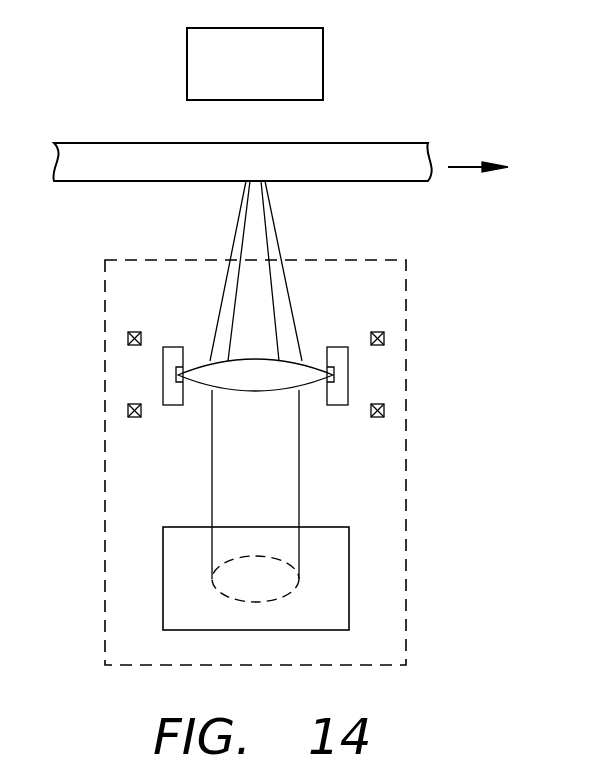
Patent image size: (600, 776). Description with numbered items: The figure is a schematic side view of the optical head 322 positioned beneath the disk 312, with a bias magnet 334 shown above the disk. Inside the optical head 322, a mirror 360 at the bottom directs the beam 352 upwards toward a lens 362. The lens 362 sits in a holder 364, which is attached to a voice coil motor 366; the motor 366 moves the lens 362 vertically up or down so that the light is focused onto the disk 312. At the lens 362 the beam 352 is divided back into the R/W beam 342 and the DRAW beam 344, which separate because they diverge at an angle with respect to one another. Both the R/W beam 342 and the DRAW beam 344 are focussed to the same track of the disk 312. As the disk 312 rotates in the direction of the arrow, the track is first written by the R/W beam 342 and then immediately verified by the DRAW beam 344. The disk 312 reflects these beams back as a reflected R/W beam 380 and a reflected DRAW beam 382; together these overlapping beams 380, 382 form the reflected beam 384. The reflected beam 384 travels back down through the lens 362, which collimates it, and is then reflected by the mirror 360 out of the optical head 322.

The bias magnet 334 is at (323, 58).
The disk 312 is at (378, 143).
The R/W beam 342 is at (210, 271).
The DRAW beam 344 is at (307, 271).
The reflected R/W beam 380 is at (233, 249).
The reflected DRAW beam 382 is at (280, 243).
The optical head 322 is at (103, 330).
The voice coil motor 366 is at (133, 347).
The holder 364 is at (168, 347).
The lens 362 is at (200, 386).
The beam 352 is at (259, 484).
The reflected beam 384 is at (212, 487).
The mirror 360 is at (349, 572).